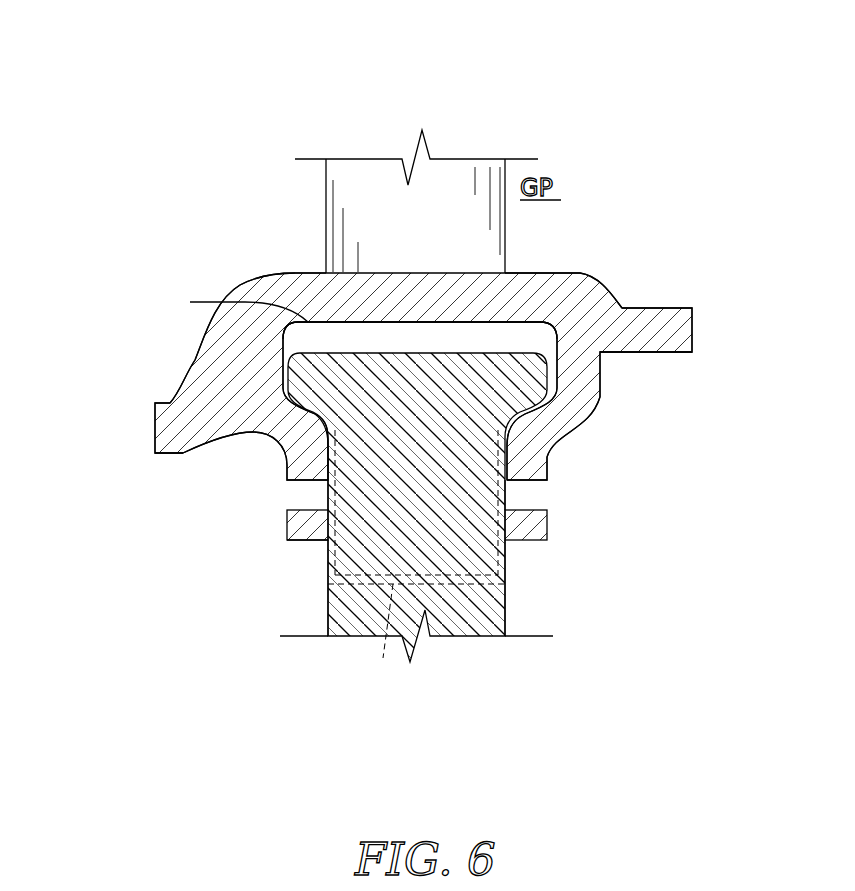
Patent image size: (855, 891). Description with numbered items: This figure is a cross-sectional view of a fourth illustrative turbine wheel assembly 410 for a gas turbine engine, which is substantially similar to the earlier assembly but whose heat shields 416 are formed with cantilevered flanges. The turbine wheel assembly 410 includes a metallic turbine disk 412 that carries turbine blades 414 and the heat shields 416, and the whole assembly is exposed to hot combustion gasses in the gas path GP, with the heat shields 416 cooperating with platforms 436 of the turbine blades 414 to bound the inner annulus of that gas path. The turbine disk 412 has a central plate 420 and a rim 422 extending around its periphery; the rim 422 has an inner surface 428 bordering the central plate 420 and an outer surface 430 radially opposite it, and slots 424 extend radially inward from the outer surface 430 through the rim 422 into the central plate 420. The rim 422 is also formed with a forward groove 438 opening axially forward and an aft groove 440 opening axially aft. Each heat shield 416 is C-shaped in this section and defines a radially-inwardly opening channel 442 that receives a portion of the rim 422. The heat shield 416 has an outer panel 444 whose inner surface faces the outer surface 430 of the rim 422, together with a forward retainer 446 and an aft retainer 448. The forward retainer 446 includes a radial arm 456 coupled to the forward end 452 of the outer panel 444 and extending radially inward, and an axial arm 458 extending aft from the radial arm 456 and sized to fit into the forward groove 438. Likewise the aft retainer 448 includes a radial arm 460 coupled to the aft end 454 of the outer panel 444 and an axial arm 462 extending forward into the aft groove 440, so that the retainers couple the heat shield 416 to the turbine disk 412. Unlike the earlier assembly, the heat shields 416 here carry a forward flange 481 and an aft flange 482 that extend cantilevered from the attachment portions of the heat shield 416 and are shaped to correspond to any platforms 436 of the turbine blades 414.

The turbine wheel assembly 410 is at (586, 138).
The turbine disk 412 is at (523, 606).
The turbine blades 414 is at (298, 192).
The heat shields 416 is at (253, 279).
The central plate 420 is at (340, 624).
The rim 422 is at (158, 551).
The slots 424 is at (375, 634).
The inner surface 428 is at (313, 542).
The outer surface 430 is at (347, 314).
The platforms 436 is at (283, 271).
The forward groove 438 is at (297, 495).
The aft groove 440 is at (527, 495).
The radially-inwardly opening channel 442 is at (500, 336).
The outer panel 444 is at (592, 271).
The forward retainer 446 is at (216, 358).
The aft retainer 448 is at (613, 323).
The forward end 452 is at (305, 269).
The aft end 454 is at (543, 268).
The radial arm 456 is at (237, 381).
The axial arm 458 is at (297, 441).
The radial arm 460 is at (568, 400).
The axial arm 462 is at (557, 430).
The forward flange 481 is at (177, 458).
The aft flange 482 is at (655, 354).